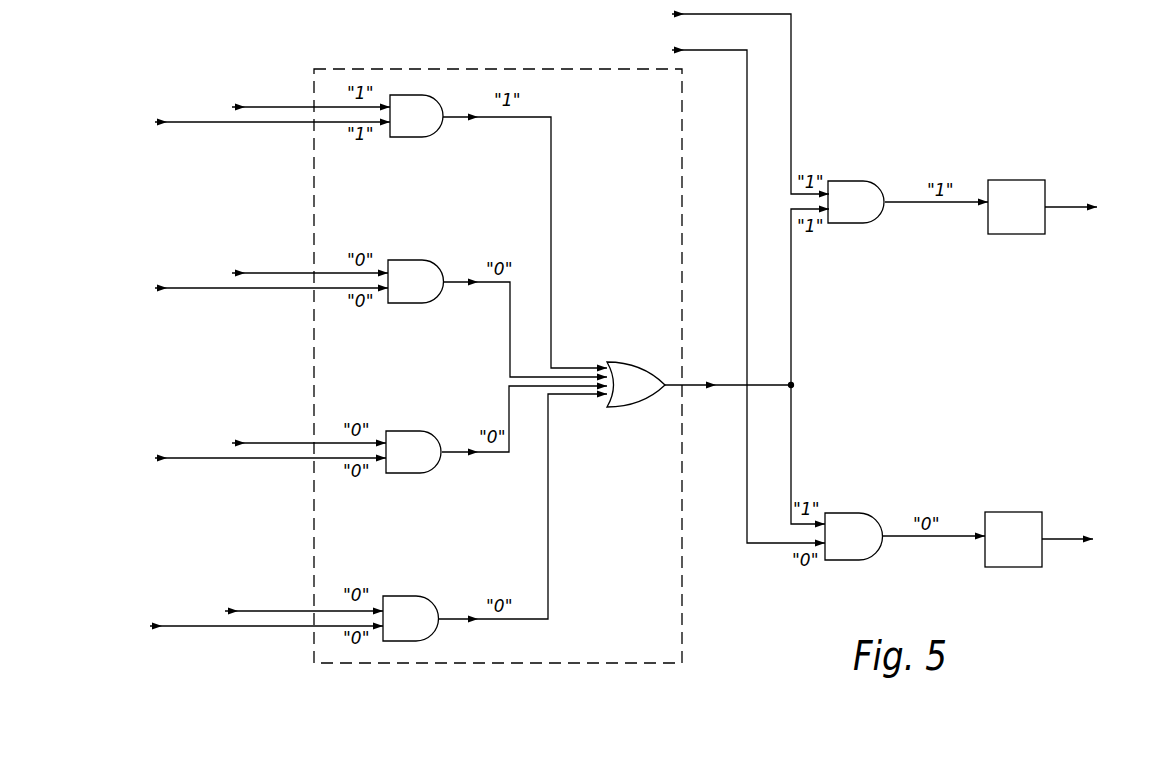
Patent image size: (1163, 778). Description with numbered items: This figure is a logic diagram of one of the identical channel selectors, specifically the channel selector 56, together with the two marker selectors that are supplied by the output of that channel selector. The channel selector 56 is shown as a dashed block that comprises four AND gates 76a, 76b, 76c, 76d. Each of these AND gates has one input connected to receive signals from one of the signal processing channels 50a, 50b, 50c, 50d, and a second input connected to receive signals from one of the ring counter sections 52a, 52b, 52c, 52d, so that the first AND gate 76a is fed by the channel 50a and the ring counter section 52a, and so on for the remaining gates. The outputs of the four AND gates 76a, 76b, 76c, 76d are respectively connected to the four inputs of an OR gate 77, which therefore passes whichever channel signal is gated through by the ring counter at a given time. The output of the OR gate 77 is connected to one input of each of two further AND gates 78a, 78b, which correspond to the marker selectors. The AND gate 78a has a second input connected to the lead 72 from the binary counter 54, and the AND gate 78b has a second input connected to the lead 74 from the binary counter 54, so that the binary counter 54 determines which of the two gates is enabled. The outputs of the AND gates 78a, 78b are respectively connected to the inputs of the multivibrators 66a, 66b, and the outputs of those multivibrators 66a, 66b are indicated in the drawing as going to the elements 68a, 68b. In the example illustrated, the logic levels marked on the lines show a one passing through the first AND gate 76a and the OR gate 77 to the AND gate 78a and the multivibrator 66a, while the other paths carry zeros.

The channel selector 56 is at (372, 66).
The AND gate 76a is at (410, 137).
The AND gate 76b is at (415, 303).
The AND gate 76c is at (408, 473).
The AND gate 76d is at (420, 596).
The OR gate 77 is at (650, 362).
The lead 72 is at (791, 108).
The lead 74 is at (747, 160).
The AND gate 78a is at (862, 181).
The AND gate 78b is at (845, 513).
The multivibrator 66a is at (1015, 180).
The multivibrator 66b is at (1012, 512).
The signal processing channel 50a is at (254, 103).
The signal processing channel 50b is at (252, 269).
The signal processing channel 50c is at (246, 439).
The signal processing channel 50d is at (245, 607).
The ring counter section 52a is at (212, 121).
The ring counter section 52b is at (209, 287).
The ring counter section 52c is at (208, 456).
The ring counter section 52d is at (207, 624).
The binary counter 54 is at (630, 34).
The output to 68a is at (1118, 208).
The output to 68b is at (1116, 541).